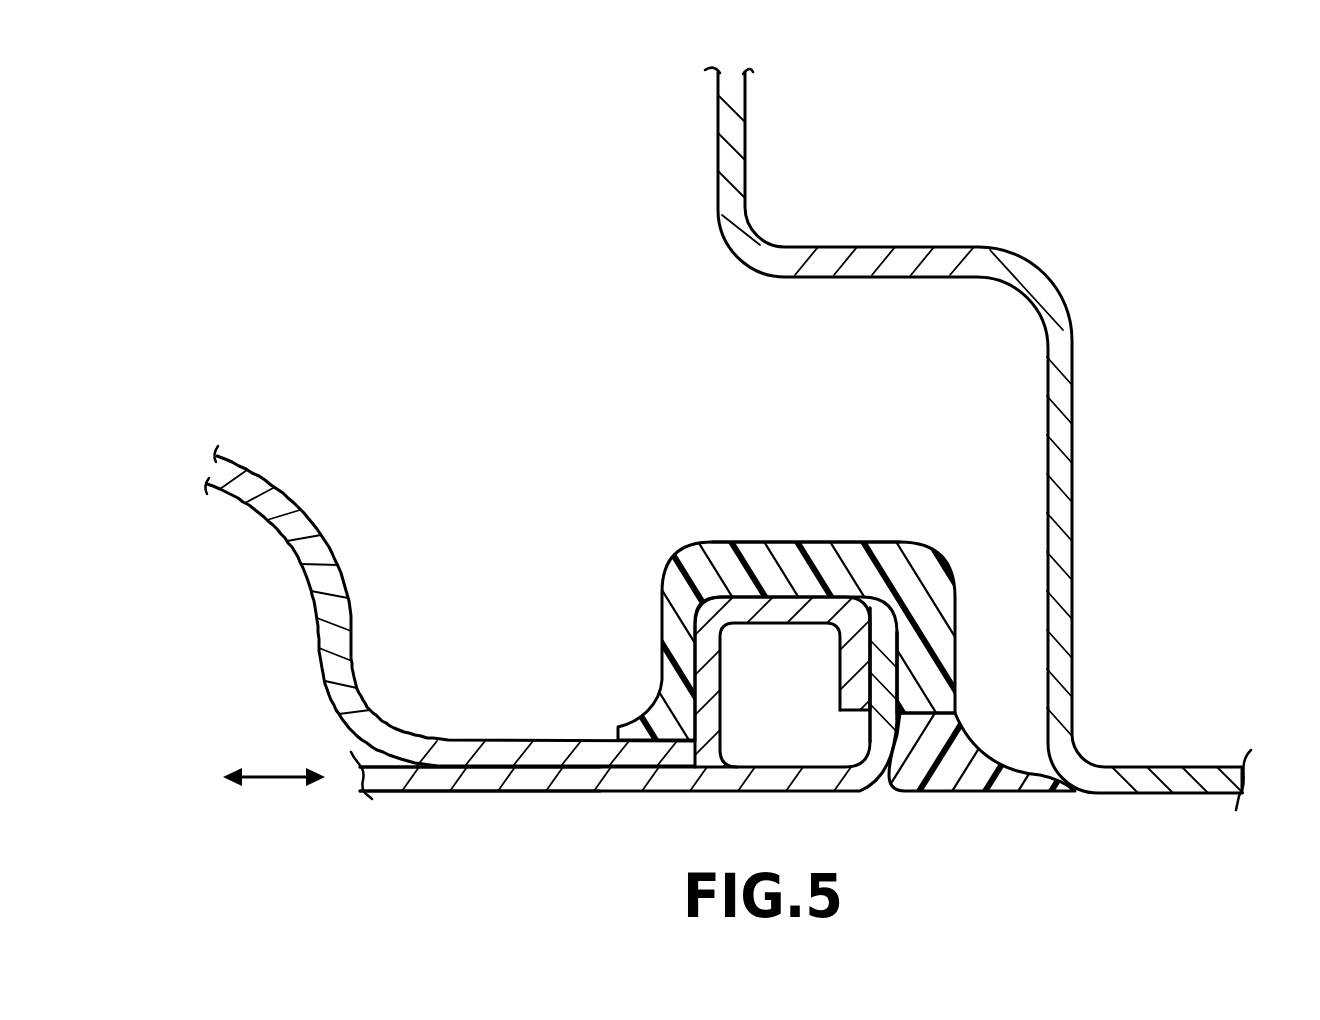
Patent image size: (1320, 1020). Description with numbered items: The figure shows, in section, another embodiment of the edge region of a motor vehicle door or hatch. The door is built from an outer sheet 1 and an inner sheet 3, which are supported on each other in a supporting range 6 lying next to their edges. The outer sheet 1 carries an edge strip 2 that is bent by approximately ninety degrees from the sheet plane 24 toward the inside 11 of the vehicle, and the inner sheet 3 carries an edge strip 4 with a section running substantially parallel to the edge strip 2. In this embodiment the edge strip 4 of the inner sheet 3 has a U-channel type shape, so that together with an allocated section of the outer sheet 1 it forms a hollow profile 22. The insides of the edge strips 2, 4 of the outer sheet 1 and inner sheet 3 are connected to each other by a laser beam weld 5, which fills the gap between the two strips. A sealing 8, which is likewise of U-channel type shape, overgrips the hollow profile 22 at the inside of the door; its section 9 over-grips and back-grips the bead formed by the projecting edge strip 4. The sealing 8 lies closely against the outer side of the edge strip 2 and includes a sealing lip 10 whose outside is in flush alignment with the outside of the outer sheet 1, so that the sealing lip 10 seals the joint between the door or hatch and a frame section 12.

The outer sheet 1 is at (753, 783).
The edge strip 2 is at (883, 683).
The inner sheet 3 is at (387, 723).
The edge strip 4 is at (858, 624).
The laser beam weld 5 is at (872, 700).
The supporting range 6 is at (529, 802).
The sealing 8 is at (788, 518).
The section 9 is at (670, 572).
The sealing lip 10 is at (1020, 795).
The inside 11 is at (1007, 472).
The frame section 12 is at (1068, 430).
The hollow profile 22 is at (753, 682).
The sheet plane 24 is at (272, 775).